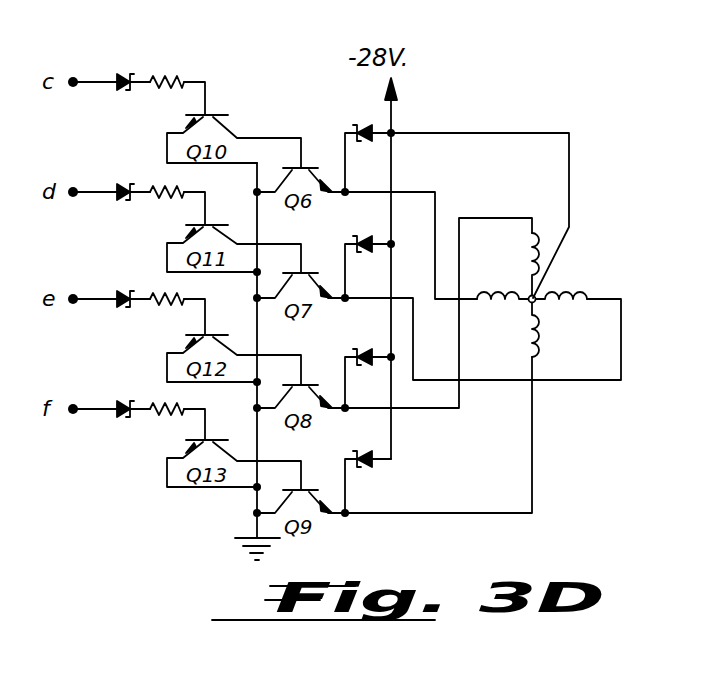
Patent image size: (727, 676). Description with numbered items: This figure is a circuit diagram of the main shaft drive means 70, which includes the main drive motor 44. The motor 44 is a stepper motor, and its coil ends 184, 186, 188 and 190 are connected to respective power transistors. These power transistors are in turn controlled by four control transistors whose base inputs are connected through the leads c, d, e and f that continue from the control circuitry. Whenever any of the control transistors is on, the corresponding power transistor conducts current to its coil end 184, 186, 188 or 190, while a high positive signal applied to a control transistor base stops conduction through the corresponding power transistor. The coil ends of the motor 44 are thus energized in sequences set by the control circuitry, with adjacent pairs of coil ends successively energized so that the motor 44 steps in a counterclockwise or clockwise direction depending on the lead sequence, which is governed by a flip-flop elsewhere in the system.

The main drive motor 44 is at (596, 271).
The main shaft drive means 70 is at (335, 320).
The coil end 184 is at (471, 303).
The coil end 186 is at (612, 299).
The coil end 188 is at (534, 217).
The coil end 190 is at (536, 379).